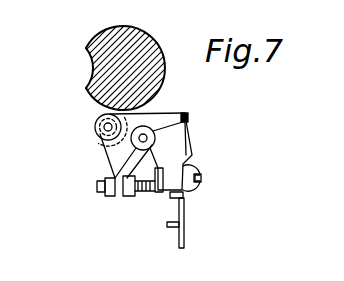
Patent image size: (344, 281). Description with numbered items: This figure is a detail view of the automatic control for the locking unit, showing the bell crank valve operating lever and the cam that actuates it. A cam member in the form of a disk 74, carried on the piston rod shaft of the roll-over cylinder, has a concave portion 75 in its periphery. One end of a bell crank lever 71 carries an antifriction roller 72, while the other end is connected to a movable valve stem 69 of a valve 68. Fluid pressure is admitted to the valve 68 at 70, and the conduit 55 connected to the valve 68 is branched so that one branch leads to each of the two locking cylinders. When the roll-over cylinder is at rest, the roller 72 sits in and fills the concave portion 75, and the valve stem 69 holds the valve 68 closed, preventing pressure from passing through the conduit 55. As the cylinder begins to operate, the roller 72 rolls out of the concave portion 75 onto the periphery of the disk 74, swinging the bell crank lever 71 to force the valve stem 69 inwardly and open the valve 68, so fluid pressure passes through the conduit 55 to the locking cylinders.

The disk 74 is at (158, 78).
The concave portion 75 is at (86, 73).
The antifriction roller 72 is at (95, 126).
The bell crank lever 71 is at (110, 152).
The valve stem 69 is at (148, 196).
The valve 68 is at (189, 193).
The fluid pressure inlet 70 is at (201, 180).
The conduit 55 is at (181, 236).